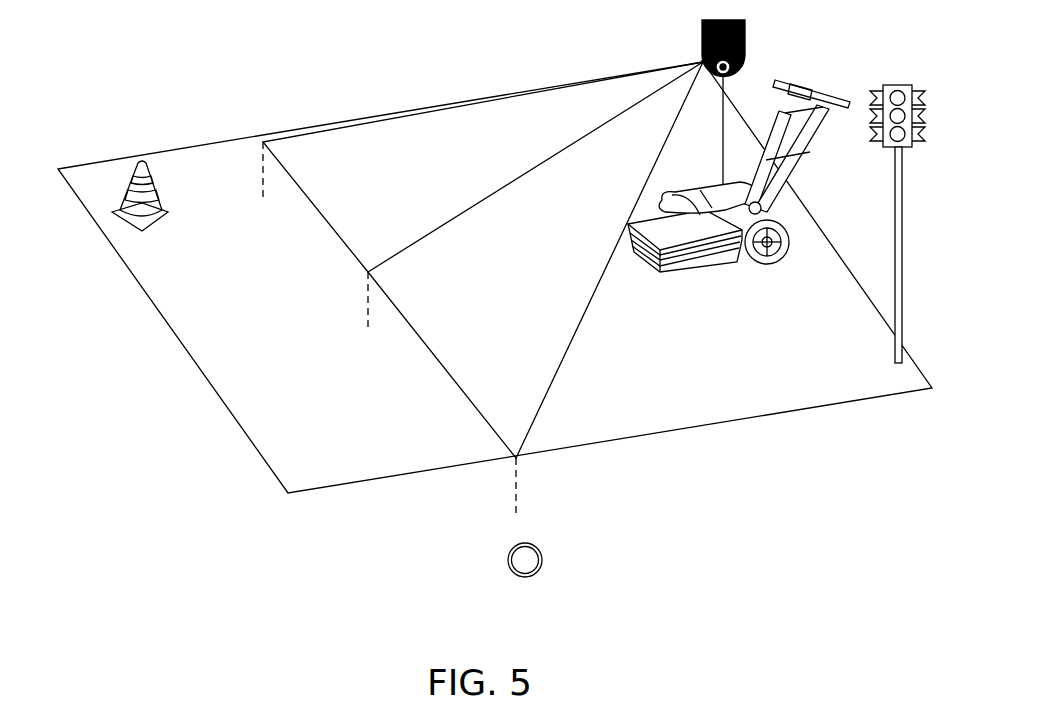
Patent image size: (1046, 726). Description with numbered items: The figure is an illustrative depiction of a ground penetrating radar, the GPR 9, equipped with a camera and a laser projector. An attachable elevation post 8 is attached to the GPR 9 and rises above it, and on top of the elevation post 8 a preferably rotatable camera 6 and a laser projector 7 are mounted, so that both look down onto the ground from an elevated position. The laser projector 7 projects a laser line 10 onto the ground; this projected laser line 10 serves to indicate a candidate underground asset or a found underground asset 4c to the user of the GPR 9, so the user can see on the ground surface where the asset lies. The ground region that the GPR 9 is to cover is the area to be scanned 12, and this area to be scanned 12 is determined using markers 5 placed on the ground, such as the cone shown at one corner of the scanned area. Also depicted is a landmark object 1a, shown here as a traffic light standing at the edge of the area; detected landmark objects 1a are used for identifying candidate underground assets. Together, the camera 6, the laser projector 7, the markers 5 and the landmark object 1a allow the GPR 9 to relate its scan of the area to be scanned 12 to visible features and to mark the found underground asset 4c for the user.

The landmark object 1a is at (902, 226).
The found underground asset 4c is at (543, 558).
The marker 5 is at (128, 190).
The camera 6 is at (745, 50).
The laser projector 7 is at (699, 61).
The elevation post 8 is at (727, 80).
The GPR 9 is at (780, 203).
The laser line 10 is at (327, 221).
The area to be scanned 12 is at (648, 354).